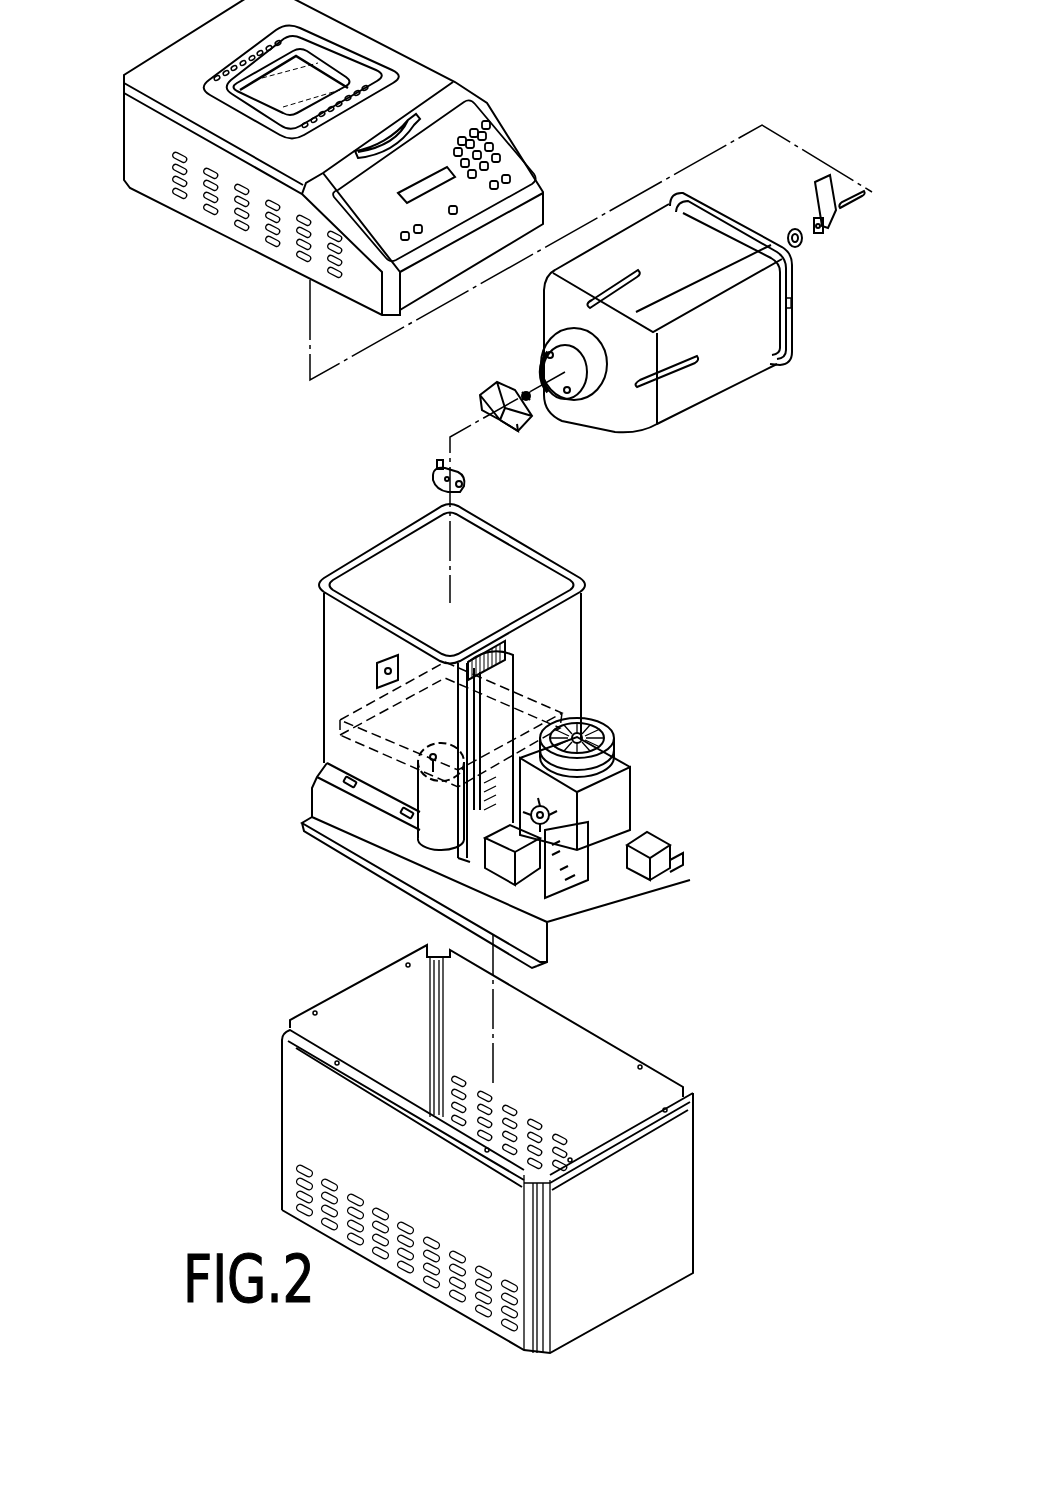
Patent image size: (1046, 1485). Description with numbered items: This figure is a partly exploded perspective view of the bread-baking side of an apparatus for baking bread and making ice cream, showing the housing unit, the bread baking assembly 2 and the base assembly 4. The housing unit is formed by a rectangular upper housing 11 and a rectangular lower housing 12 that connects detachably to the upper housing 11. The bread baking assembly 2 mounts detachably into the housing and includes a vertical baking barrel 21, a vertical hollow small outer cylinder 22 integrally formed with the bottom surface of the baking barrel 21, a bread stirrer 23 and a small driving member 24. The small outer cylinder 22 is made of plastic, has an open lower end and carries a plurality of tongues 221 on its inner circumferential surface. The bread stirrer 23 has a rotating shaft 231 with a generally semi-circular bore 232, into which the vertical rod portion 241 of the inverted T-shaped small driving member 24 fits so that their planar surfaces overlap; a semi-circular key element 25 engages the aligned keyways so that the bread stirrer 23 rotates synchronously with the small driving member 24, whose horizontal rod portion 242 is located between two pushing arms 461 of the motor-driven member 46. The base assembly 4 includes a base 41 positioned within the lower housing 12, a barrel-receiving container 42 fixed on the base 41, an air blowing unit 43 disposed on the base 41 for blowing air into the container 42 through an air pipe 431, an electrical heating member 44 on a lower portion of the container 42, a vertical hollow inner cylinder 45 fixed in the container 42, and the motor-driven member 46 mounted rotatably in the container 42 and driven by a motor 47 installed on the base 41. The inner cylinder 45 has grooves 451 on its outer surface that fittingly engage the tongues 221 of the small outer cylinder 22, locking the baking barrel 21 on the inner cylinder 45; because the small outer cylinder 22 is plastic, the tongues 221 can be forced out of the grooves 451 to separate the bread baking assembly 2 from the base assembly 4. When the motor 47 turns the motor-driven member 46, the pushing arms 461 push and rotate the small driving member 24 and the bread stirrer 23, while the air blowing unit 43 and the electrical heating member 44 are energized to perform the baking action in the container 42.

The upper housing 11 is at (136, 180).
The lower housing 12 is at (693, 1150).
The bread baking assembly 2 is at (737, 384).
The baking barrel 21 is at (660, 422).
The small outer cylinder 22 is at (570, 334).
The tongues 221 is at (540, 357).
The bread stirrer 23 is at (813, 188).
The rotating shaft 231 is at (833, 226).
The bore 232 is at (812, 236).
The small driving member 24 is at (478, 409).
The vertical rod portion 241 is at (533, 399).
The horizontal rod portion 242 is at (513, 430).
The key element 25 is at (847, 197).
The base assembly 4 is at (583, 690).
The base 41 is at (320, 803).
The barrel-receiving container 42 is at (323, 640).
The air blowing unit 43 is at (497, 870).
The air pipe 431 is at (512, 662).
The electrical heating member 44 is at (333, 727).
The inner cylinder 45 is at (430, 788).
The grooves 451 is at (317, 853).
The motor-driven member 46 is at (432, 490).
The pushing arms 461 is at (435, 468).
The motor 47 is at (620, 792).